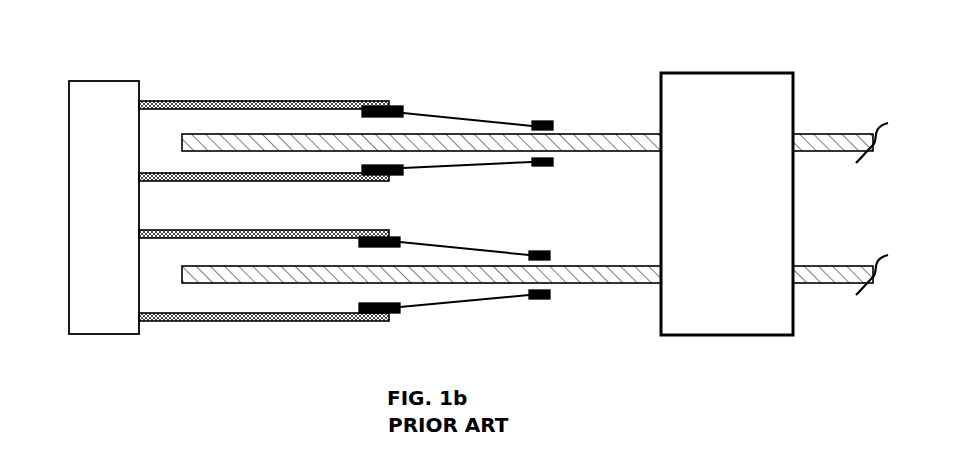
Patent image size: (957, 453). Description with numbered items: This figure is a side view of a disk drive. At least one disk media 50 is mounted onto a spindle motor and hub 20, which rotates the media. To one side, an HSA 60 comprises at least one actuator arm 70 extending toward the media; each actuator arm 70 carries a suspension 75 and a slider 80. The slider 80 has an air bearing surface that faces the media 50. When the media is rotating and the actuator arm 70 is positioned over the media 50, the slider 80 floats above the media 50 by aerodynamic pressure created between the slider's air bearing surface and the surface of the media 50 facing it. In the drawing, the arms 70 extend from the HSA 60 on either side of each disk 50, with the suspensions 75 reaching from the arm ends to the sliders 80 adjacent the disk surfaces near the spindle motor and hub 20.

The spindle motor and hub 20 is at (730, 183).
The disk media 50 is at (535, 154).
The HSA 60 is at (121, 186).
The actuator arm 70 is at (271, 187).
The suspension 75 is at (466, 187).
The slider 80 is at (515, 156).